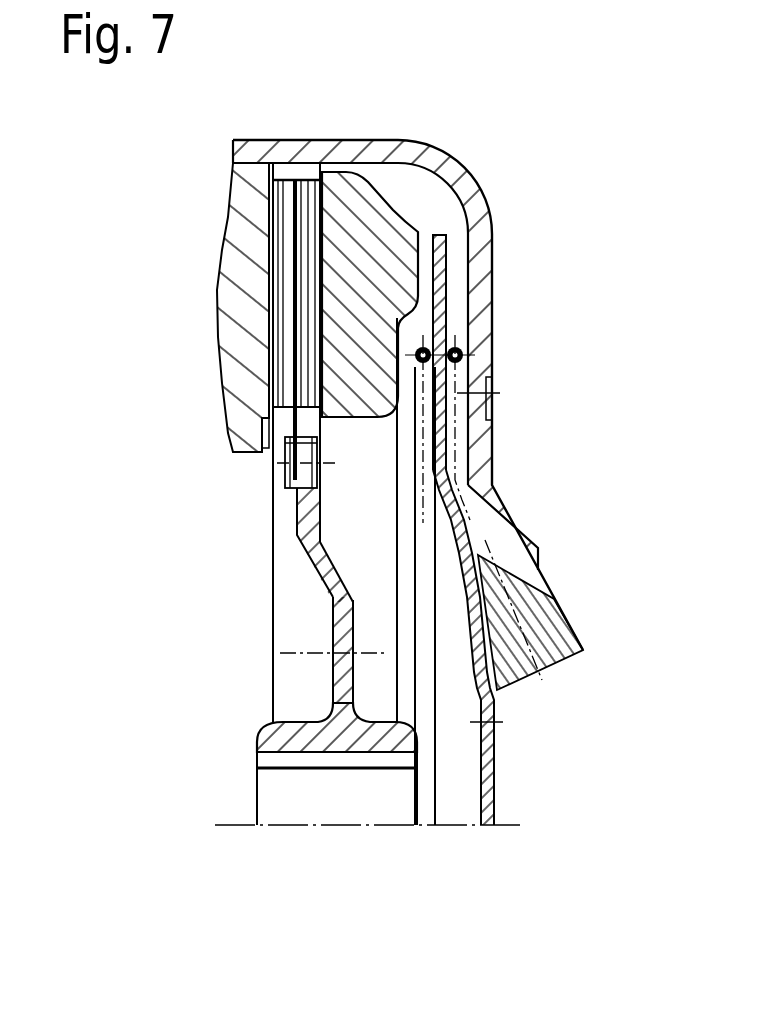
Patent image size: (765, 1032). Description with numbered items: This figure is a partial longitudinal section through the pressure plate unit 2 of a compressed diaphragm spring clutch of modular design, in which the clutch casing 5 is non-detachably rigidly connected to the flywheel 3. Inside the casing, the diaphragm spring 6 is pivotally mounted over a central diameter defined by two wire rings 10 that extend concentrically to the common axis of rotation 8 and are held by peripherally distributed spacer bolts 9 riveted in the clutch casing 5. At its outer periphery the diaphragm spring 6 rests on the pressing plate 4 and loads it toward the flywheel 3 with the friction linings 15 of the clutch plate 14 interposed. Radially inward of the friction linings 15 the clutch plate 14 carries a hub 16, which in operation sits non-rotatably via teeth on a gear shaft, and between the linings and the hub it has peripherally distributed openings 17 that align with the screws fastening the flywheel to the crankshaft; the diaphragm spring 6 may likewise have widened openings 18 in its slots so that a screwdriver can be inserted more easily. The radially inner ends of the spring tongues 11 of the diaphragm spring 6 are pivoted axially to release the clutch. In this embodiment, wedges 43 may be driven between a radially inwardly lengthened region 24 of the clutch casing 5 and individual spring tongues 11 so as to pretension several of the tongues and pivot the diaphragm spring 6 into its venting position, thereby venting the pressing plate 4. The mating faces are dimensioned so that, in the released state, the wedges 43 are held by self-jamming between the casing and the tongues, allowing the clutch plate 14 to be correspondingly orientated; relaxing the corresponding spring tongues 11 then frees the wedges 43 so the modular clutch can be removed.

The pressure plate unit 2 is at (550, 150).
The flywheel 3 is at (238, 243).
The pressing plate 4 is at (365, 190).
The clutch casing 5 is at (442, 165).
The diaphragm spring 6 is at (440, 303).
The axis of rotation 8 is at (228, 828).
The spacer bolts 9 is at (488, 392).
The wire rings 10 is at (452, 338).
The spring tongues 11 is at (455, 508).
The clutch plate 14 is at (303, 523).
The friction linings 15 is at (305, 178).
The hub 16 is at (283, 740).
The openings 17 is at (340, 609).
The openings 18 is at (475, 618).
The radially inwardly lengthened region 24 is at (508, 528).
The wedges 43 is at (563, 632).